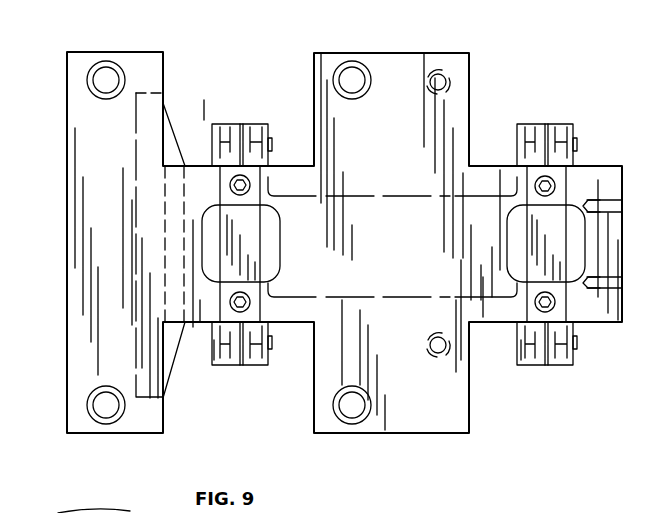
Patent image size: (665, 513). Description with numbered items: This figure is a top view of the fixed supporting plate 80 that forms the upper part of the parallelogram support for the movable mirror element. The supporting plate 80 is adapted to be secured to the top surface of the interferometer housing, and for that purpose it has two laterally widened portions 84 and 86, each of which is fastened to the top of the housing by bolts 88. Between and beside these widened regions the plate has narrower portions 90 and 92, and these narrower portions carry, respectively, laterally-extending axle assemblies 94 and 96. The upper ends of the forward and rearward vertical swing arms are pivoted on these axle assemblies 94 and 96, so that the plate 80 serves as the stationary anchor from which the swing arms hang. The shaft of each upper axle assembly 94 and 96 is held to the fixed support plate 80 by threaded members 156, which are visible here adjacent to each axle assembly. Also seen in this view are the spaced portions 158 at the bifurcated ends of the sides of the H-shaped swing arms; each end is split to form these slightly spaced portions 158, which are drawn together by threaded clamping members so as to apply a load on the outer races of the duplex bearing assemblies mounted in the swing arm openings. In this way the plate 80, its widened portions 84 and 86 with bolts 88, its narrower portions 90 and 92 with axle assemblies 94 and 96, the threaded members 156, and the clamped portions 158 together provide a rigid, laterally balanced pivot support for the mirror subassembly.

The supporting plate 80 is at (482, 95).
The laterally widened portion 84 is at (95, 330).
The laterally widened portion 86 is at (425, 402).
The bolts 88 is at (112, 76).
The narrower portion 90 is at (200, 305).
The narrower portion 92 is at (496, 305).
The axle assembly 94 is at (222, 375).
The axle assembly 96 is at (531, 378).
The threaded members 156 is at (250, 185).
The spaced portions 158 is at (249, 128).